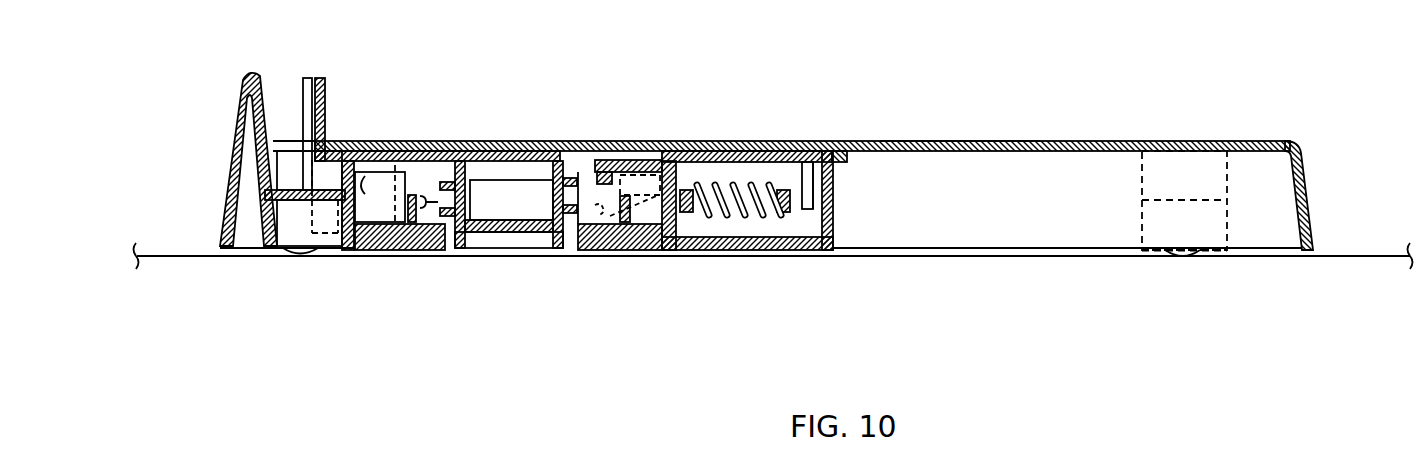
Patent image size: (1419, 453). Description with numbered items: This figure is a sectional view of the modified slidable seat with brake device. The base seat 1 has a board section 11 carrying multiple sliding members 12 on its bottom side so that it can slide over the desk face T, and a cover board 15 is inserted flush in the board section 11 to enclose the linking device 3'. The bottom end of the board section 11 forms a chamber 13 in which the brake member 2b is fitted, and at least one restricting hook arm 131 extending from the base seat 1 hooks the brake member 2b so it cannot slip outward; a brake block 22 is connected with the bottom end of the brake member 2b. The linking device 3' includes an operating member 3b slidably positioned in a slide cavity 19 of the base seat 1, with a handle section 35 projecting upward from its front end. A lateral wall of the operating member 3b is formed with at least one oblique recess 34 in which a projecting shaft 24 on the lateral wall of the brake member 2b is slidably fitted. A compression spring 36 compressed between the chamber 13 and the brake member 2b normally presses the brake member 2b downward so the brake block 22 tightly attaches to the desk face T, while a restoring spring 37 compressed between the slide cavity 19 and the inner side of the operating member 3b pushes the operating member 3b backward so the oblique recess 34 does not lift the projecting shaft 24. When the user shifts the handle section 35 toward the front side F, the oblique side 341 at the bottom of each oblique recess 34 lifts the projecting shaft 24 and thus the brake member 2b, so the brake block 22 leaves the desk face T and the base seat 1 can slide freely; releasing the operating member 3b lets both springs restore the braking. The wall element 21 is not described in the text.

The base seat 1 is at (1045, 141).
The board section 11 is at (968, 141).
The sliding member 12 is at (297, 252).
The chamber 13 is at (580, 141).
The restricting hook arm 131 is at (542, 141).
The cover board 15 is at (725, 141).
The slide cavity 19 is at (777, 240).
The housing wall 21 is at (350, 140).
The brake block 22 is at (620, 253).
The projecting shaft 24 is at (383, 258).
The brake member 2b is at (567, 252).
The oblique recess 34 is at (408, 140).
The oblique side 341 is at (425, 258).
The handle section 35 is at (306, 78).
The compression spring 36 is at (448, 141).
The restoring spring 37 is at (735, 243).
The operating member 3b is at (334, 104).
The linking device 3' is at (805, 134).
The front side F is at (148, 88).
The desk face T is at (193, 255).